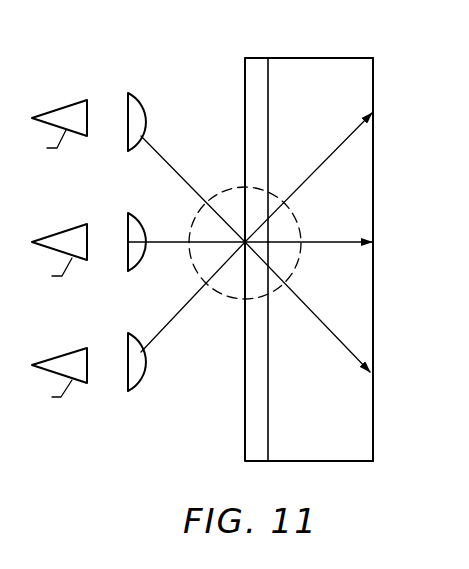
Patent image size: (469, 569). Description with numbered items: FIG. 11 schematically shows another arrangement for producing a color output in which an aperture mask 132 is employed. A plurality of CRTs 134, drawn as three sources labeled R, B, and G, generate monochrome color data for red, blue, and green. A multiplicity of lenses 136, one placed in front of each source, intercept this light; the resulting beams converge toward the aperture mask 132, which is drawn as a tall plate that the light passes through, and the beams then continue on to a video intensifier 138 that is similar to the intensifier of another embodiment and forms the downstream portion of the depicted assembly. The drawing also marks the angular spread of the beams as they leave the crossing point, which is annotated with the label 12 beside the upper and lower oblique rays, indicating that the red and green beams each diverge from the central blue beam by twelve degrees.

The aperture mask 132 is at (309, 236).
The CRTs 134 is at (83, 215).
The lenses 136 is at (170, 217).
The video intensifier 138 is at (413, 259).
The angle between beams (12 degrees) 12 is at (300, 233).